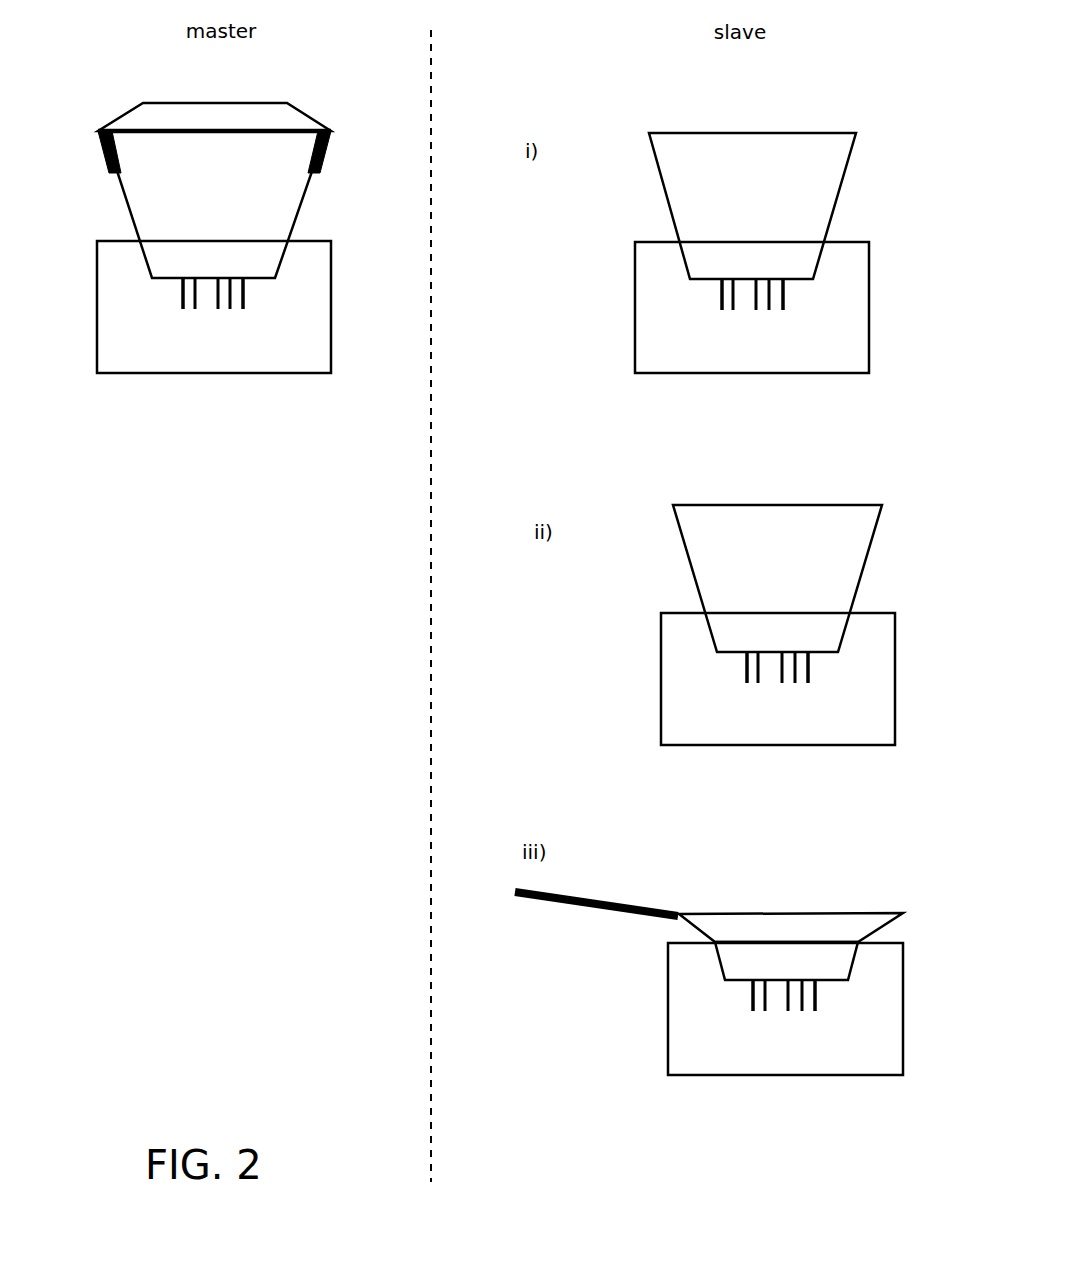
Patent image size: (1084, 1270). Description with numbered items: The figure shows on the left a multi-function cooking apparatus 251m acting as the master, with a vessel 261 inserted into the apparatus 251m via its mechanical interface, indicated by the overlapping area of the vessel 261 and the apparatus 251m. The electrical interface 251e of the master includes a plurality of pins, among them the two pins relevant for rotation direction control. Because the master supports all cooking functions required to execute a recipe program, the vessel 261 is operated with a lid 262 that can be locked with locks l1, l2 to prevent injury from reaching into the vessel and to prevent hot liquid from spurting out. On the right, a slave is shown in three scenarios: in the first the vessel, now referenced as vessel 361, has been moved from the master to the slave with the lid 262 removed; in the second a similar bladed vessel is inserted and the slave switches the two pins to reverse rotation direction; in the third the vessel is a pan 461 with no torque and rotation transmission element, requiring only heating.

The lid 262 is at (296, 105).
The vessel 261 is at (300, 204).
The lock l1 is at (328, 149).
The lock l2 is at (102, 154).
The multi-function cooking apparatus 251m is at (133, 375).
The electrical interface 251e is at (173, 310).
The vessel 361 is at (836, 206).
The pan 461 is at (872, 913).